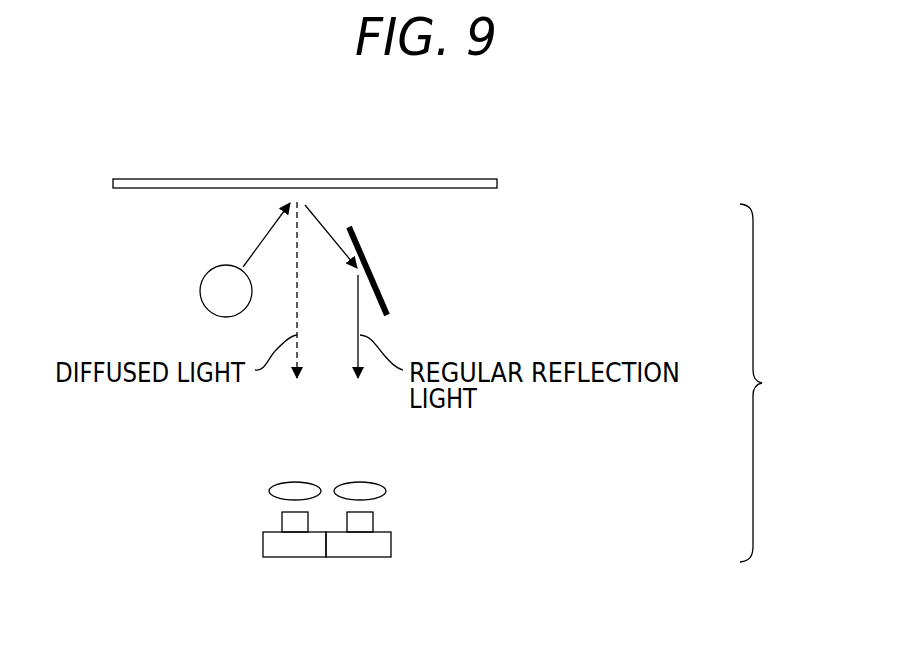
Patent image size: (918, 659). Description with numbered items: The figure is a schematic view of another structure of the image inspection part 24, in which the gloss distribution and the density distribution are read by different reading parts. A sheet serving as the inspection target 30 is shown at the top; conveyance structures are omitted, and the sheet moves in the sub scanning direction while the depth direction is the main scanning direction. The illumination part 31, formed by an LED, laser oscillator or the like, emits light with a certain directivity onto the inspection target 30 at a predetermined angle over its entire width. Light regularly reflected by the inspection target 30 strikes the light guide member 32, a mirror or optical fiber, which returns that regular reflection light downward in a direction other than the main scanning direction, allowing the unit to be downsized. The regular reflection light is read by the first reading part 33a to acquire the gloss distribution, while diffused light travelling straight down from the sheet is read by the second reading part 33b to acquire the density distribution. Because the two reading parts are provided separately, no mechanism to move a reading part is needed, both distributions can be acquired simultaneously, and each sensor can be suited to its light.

The image inspection part 24 is at (767, 383).
The inspection target 30 is at (447, 183).
The illumination part 31 is at (210, 291).
The light guide member 32 is at (372, 265).
The first reading part 33a is at (358, 548).
The second reading part 33b is at (293, 548).